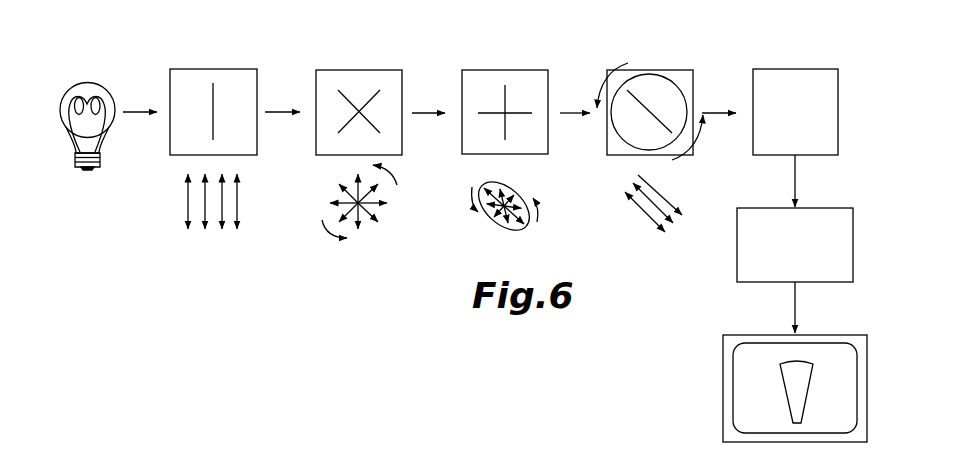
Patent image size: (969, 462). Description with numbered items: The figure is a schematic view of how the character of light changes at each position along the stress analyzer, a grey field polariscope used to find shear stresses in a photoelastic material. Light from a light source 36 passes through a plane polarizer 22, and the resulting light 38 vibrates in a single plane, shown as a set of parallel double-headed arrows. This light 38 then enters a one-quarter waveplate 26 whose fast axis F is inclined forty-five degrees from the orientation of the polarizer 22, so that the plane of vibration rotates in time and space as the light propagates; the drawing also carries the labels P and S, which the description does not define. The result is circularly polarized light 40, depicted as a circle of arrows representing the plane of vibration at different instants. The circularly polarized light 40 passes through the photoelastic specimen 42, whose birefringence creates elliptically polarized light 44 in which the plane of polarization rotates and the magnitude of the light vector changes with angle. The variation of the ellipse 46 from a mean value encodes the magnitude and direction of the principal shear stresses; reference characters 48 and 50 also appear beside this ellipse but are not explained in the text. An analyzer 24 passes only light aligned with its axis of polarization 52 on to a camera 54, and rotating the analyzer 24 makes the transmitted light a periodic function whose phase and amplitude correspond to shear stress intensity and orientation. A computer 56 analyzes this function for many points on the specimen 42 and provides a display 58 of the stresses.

The light source 36 is at (70, 83).
The plane polarizer 22 is at (241, 69).
The plane polarized light 38 is at (238, 207).
The one-quarter waveplate 26 is at (316, 97).
The circularly polarized light 40 is at (371, 214).
The photoelastic specimen 42 is at (462, 90).
The elliptically polarized light 44 is at (560, 110).
The elliptical polarization state 48 is at (490, 187).
The rotation direction of polarization 50 is at (496, 228).
The ellipse 46 is at (527, 223).
The analyzer 24 is at (617, 157).
The axis of polarization 52 is at (649, 108).
The camera 54 is at (780, 69).
The computer 56 is at (737, 253).
The display 58 is at (723, 393).
The polarization axis P is at (190, 69).
The fast axis F is at (350, 100).
The slow axis S is at (375, 98).